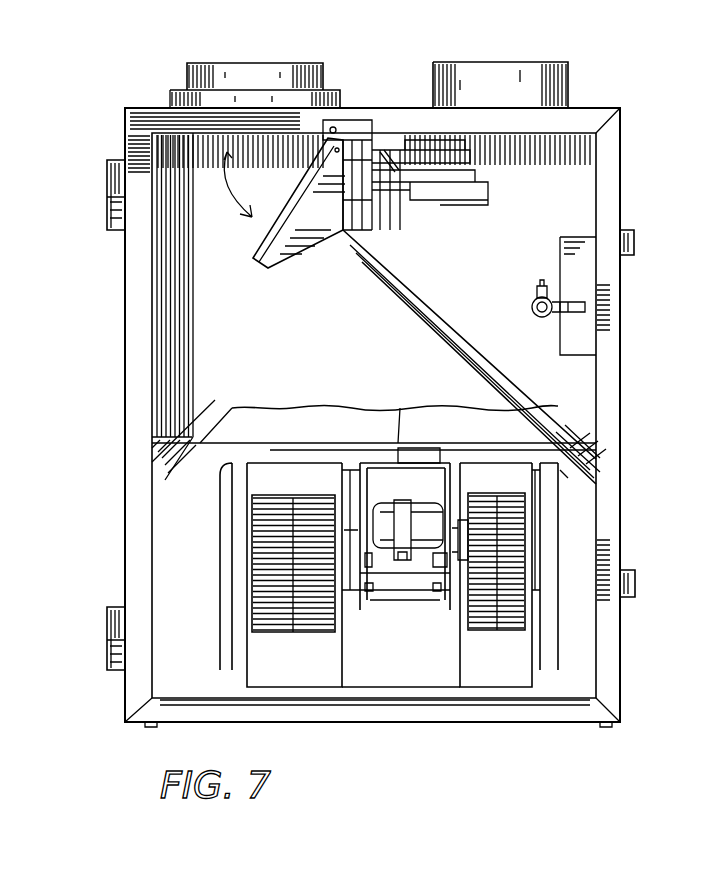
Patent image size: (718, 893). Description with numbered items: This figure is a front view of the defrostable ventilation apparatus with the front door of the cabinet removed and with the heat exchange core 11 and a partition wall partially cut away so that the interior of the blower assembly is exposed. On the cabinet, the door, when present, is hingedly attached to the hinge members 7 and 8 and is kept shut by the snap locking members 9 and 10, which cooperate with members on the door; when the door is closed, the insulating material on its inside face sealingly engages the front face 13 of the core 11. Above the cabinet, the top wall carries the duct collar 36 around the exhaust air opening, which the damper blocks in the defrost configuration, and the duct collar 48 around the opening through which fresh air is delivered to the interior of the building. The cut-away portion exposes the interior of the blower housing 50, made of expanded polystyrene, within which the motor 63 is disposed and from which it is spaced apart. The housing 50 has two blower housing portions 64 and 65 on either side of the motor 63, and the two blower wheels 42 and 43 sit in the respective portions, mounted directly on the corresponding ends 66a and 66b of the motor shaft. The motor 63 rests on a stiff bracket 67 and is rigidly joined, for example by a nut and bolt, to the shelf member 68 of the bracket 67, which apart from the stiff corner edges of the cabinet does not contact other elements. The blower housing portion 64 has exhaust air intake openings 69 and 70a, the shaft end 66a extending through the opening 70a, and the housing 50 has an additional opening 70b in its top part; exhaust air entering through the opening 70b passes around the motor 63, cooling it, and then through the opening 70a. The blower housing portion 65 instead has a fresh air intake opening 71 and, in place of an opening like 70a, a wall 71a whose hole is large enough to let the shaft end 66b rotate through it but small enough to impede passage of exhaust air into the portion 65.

The hinge member 7 is at (634, 242).
The hinge member 8 is at (636, 588).
The snap locking member 9 is at (108, 208).
The snap locking member 10 is at (108, 640).
The core 11 is at (308, 325).
The front face of the core 13 is at (560, 194).
The duct collar 36 is at (186, 70).
The blower wheel 42 is at (272, 634).
The blower wheel 43 is at (528, 630).
The duct collar 48 is at (570, 72).
The blower housing 50 is at (330, 438).
The motor 63 is at (400, 578).
The blower housing portion 64 is at (530, 454).
The blower housing portion 65 is at (262, 464).
The end of the motor shaft 66a is at (497, 636).
The end of the motor shaft 66b is at (313, 638).
The stiff bracket 67 is at (374, 682).
The shelf member 68 is at (426, 604).
The exhaust air intake opening 69 is at (532, 552).
The exhaust air intake opening 70a is at (464, 524).
The opening 70b is at (430, 450).
The fresh air intake opening 71 is at (236, 553).
The wall 71a is at (346, 532).